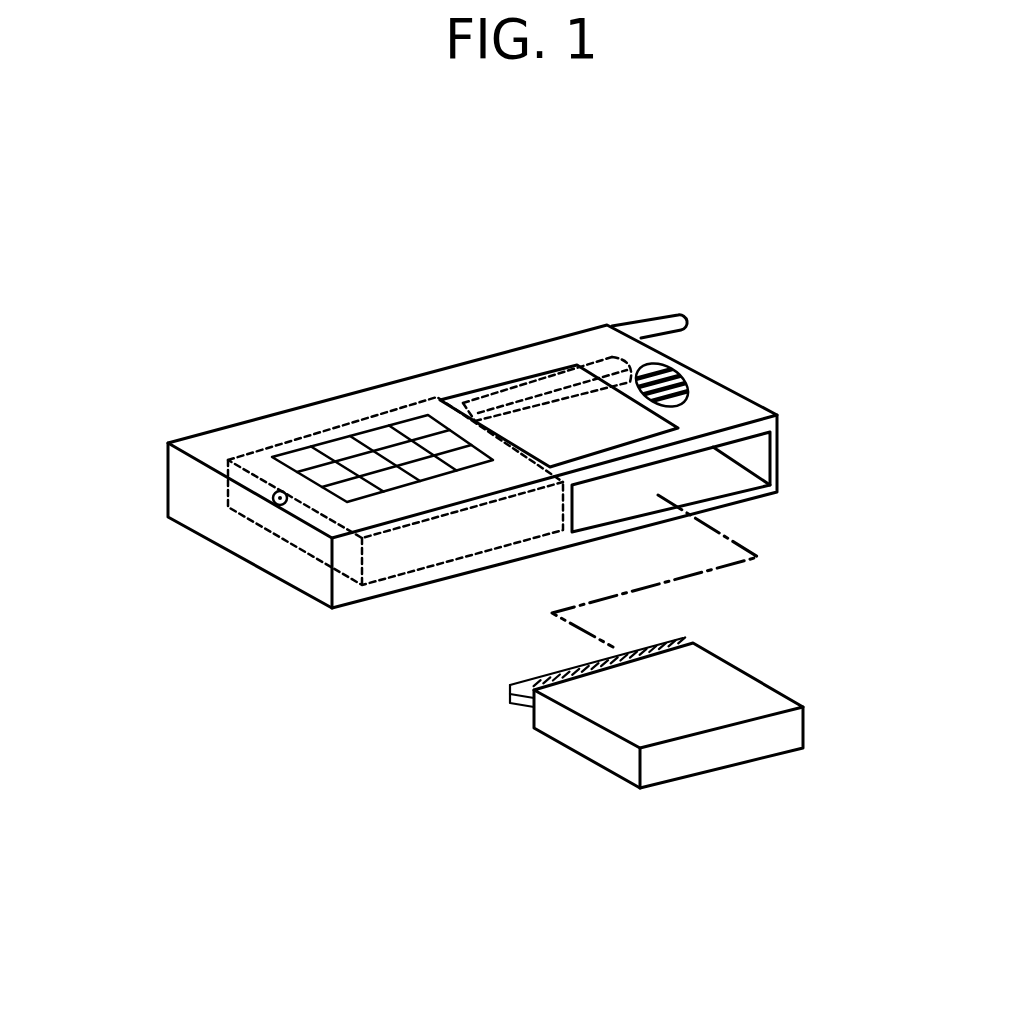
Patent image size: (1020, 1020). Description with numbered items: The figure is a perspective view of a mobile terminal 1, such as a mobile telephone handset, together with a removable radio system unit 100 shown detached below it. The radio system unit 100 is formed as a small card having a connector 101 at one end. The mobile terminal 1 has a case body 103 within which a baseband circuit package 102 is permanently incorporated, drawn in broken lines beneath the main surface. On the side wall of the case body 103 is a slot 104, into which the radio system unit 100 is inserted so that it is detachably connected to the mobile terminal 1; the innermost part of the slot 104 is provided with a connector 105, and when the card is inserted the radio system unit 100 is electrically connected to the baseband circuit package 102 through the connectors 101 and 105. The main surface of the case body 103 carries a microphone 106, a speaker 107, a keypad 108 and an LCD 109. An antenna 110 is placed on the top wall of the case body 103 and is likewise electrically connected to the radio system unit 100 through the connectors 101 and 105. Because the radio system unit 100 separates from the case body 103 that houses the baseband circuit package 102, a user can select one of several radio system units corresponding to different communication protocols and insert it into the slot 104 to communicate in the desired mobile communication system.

The mobile terminal 1 is at (373, 384).
The radio system unit 100 is at (617, 755).
The connector 101 is at (510, 703).
The baseband circuit package 102 is at (447, 533).
The case body 103 is at (223, 452).
The slot 104 is at (773, 492).
The connector 105 is at (517, 384).
The microphone 106 is at (275, 506).
The speaker 107 is at (670, 370).
The keypad 108 is at (338, 488).
The LCD 109 is at (578, 418).
The antenna 110 is at (678, 317).